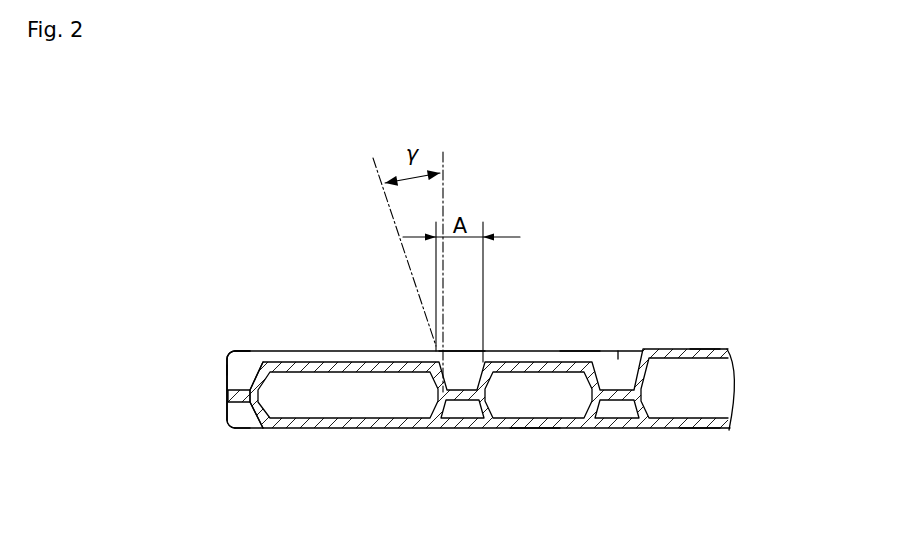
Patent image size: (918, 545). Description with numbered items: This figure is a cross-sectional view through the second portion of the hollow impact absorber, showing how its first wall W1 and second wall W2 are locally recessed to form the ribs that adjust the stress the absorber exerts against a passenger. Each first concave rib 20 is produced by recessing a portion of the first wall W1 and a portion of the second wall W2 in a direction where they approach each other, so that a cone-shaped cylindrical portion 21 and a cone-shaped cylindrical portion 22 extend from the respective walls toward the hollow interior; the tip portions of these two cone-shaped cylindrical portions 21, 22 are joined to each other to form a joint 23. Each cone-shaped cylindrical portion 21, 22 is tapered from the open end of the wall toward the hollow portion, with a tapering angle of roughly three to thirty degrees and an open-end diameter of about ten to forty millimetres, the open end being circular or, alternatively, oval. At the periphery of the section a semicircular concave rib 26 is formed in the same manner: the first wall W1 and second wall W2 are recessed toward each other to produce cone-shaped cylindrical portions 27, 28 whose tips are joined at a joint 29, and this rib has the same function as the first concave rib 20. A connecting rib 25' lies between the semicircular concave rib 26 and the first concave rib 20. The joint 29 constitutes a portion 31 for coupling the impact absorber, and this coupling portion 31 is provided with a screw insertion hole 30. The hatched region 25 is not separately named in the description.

The first concave rib 20 is at (463, 356).
The cone-shaped cylindrical portion 21 is at (484, 362).
The cone-shaped cylindrical portion 22 is at (468, 428).
The joint 23 is at (467, 400).
The hatched core wall 25 is at (478, 354).
The connecting rib 25' is at (480, 356).
The semicircular concave rib 26 is at (236, 352).
The cone-shaped cylindrical portion 27 is at (256, 376).
The cone-shaped cylindrical portion 28 is at (251, 414).
The joint 29 is at (228, 410).
The screw insertion hole 30 is at (242, 389).
The portion for coupling the impact absorber 31 is at (199, 393).
The first wall W1 is at (538, 428).
The second wall W2 is at (573, 349).